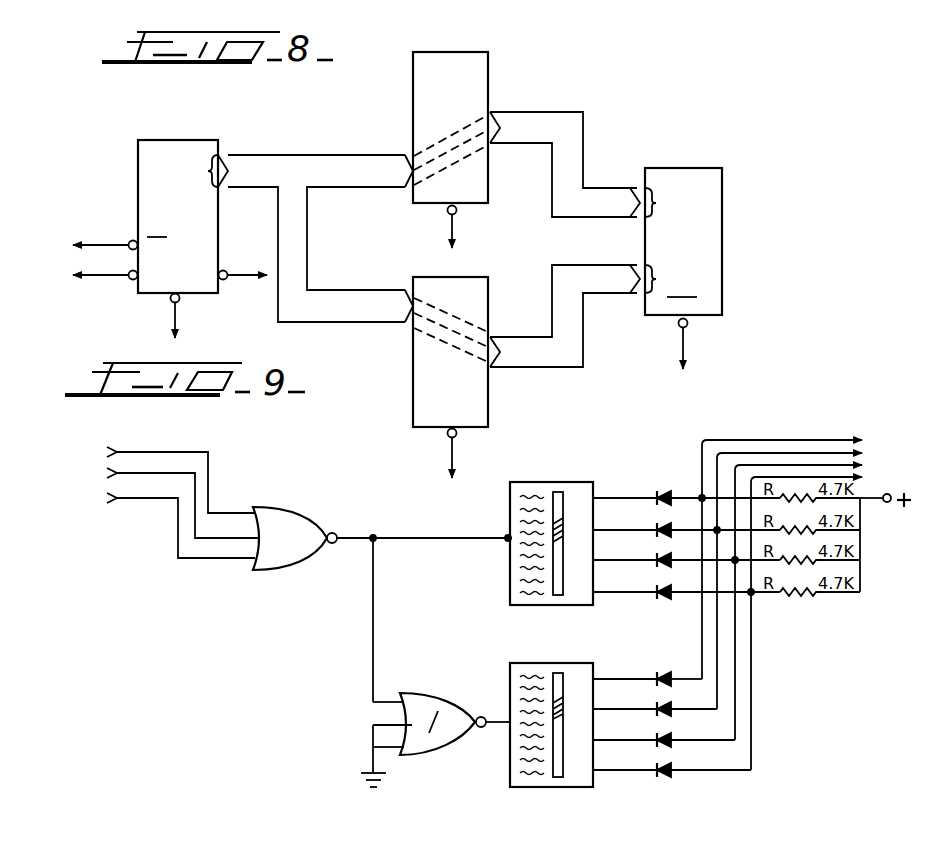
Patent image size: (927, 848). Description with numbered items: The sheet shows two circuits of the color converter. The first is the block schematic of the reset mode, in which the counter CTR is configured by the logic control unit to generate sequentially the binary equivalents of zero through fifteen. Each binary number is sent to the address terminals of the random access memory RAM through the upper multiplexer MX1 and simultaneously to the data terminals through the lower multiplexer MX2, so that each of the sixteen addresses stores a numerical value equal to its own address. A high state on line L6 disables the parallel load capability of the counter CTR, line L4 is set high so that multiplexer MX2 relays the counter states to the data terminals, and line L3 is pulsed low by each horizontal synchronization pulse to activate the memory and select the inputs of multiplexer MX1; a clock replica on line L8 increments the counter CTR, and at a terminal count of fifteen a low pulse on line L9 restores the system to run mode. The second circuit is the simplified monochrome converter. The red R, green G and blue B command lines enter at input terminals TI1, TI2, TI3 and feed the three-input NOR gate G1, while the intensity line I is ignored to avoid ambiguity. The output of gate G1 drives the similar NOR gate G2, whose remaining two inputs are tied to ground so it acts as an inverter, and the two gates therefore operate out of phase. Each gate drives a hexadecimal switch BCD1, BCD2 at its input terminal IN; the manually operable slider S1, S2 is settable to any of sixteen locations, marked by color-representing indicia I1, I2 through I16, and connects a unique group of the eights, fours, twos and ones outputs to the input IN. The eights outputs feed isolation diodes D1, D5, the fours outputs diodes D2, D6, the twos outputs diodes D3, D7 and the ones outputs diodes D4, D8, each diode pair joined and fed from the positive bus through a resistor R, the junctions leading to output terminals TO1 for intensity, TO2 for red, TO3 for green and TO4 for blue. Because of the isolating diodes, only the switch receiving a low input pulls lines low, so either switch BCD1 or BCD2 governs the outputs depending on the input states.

In FIG. 8, the counter CTR is at (183, 140).
In FIG. 8, the multiplexer MX1 is at (440, 52).
In FIG. 8, the lower multiplexer MX2 is at (440, 277).
In FIG. 8, the random access memory RAM is at (722, 186).
In FIG. 8, the line L3 is at (448, 216).
In FIG. 8, the line L4 is at (449, 456).
In FIG. 8, the line L6 is at (113, 245).
In FIG. 8, the clock pulse line L8 is at (128, 284).
In FIG. 8, the line L9 is at (240, 274).
In FIG. 9, the input terminal TI1 is at (154, 477).
In FIG. 9, the input terminal TI2 is at (156, 500).
In FIG. 9, the input terminal TI3 is at (154, 523).
In FIG. 9, the resistor R is at (178, 451).
In FIG. 9, the green signal line G is at (170, 472).
In FIG. 9, the blue signal line B is at (168, 497).
In FIG. 9, the intensity signal line I is at (739, 440).
In FIG. 9, the three-input NOR gate G1 is at (321, 514).
In FIG. 9, the three-input NOR gate G2 is at (418, 692).
In FIG. 9, the hexadecimal switch BCD1 is at (580, 525).
In FIG. 9, the hexadecimal switch BCD2 is at (577, 713).
In FIG. 9, the manually operable member S1 is at (560, 528).
In FIG. 9, the manually operable member S2 is at (560, 712).
In FIG. 9, the color-representing indicia I1 is at (520, 498).
In FIG. 9, the color-representing indicia I2 is at (520, 510).
In FIG. 9, the input terminal IN is at (506, 540).
In FIG. 9, the color-representing indicia I16 is at (520, 596).
In FIG. 9, the germanium isolation diode D1 is at (686, 492).
In FIG. 9, the germanium isolation diode D2 is at (686, 524).
In FIG. 9, the germanium isolation diode D3 is at (686, 554).
In FIG. 9, the germanium isolation diode D4 is at (686, 586).
In FIG. 9, the germanium isolation diode D5 is at (647, 673).
In FIG. 9, the germanium isolation diode D6 is at (655, 703).
In FIG. 9, the germanium isolation diode D7 is at (664, 734).
In FIG. 9, the germanium isolation diode D8 is at (672, 764).
In FIG. 9, the output terminal TO1 is at (805, 555).
In FIG. 9, the output terminal TO2 is at (813, 576).
In FIG. 9, the output terminal TO3 is at (822, 598).
In FIG. 9, the output terminal TO4 is at (830, 619).